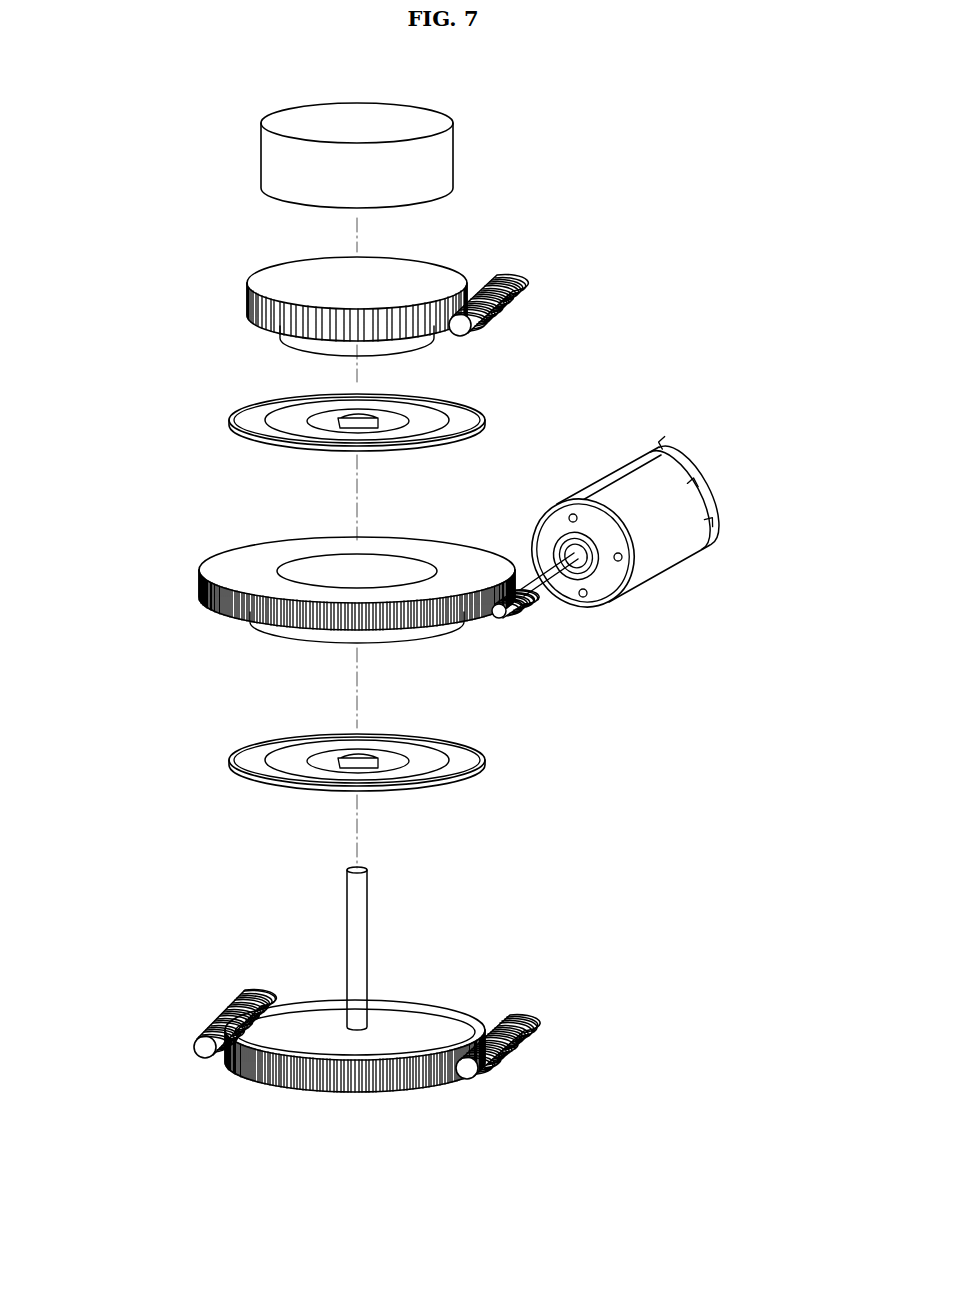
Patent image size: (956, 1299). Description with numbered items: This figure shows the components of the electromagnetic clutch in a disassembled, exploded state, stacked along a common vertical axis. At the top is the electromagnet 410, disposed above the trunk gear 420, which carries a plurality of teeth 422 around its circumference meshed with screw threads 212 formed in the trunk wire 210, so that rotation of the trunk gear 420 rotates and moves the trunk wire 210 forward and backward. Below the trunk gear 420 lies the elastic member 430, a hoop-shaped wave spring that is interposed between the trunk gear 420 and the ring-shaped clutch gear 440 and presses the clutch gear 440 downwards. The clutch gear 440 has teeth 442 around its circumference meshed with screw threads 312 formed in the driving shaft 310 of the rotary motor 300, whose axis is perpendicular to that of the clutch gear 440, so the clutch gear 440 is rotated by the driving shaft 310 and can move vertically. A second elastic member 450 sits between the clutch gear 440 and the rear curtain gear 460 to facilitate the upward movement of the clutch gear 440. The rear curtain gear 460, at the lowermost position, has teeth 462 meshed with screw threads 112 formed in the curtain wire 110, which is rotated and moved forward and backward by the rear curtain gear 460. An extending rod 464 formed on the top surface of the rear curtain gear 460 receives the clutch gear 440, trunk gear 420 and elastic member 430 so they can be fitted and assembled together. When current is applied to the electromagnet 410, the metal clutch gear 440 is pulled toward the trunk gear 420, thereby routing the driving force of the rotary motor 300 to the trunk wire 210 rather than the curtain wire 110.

The curtain wire 110 is at (215, 1017).
The screw threads 112 is at (512, 1040).
The trunk wire 210 is at (468, 328).
The screw threads 212 is at (503, 280).
The rotary motor 300 is at (690, 455).
The driving shaft 310 is at (566, 588).
The screw threads 312 is at (512, 608).
The electromagnet 410 is at (272, 155).
The trunk gear 420 is at (290, 278).
The teeth 422 is at (255, 303).
The elastic member 430 is at (283, 420).
The clutch gear 440 is at (245, 565).
The teeth 442 is at (200, 588).
The second elastic member 450 is at (283, 760).
The rear curtain gear 460 is at (310, 1010).
The teeth 462 is at (285, 1090).
The extending rod 464 is at (360, 912).